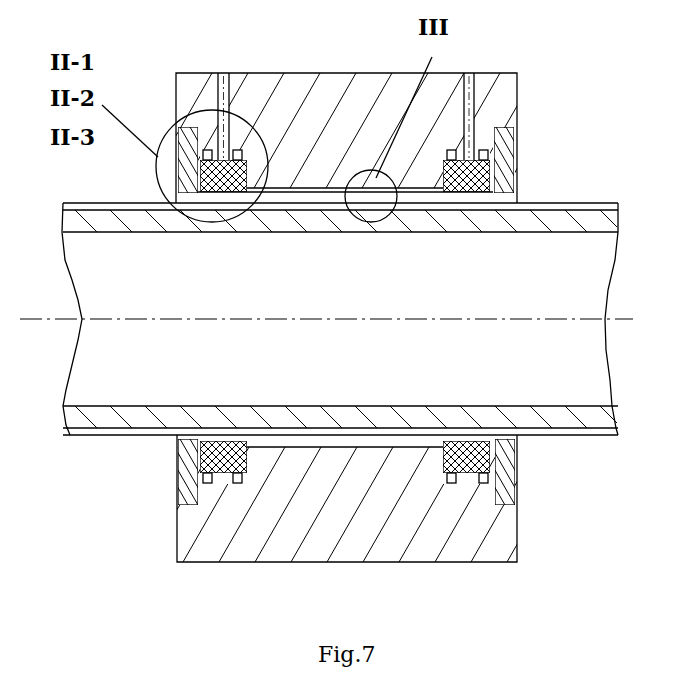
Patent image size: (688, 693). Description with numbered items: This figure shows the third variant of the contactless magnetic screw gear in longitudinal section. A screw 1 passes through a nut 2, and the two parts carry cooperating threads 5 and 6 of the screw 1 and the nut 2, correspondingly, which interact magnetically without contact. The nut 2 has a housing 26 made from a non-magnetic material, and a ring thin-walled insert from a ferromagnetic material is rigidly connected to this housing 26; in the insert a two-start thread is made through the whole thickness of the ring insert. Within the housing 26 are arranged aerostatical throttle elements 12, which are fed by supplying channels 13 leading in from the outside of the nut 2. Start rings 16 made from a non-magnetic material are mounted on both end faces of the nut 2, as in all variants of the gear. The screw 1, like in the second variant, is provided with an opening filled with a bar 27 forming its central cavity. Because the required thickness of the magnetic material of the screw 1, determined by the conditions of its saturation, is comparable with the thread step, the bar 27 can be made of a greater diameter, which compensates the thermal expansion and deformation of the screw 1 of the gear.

The screw 1 is at (70, 275).
The nut 2 is at (175, 108).
The thread of the screw 5 is at (532, 203).
The thread of the nut 6 is at (397, 448).
The aerostatical throttle element 12 is at (177, 500).
The supplying channel 13 is at (218, 95).
The start ring 16 is at (177, 472).
The housing of the nut 26 is at (333, 115).
The central cavity or bar of the screw 27 is at (170, 332).